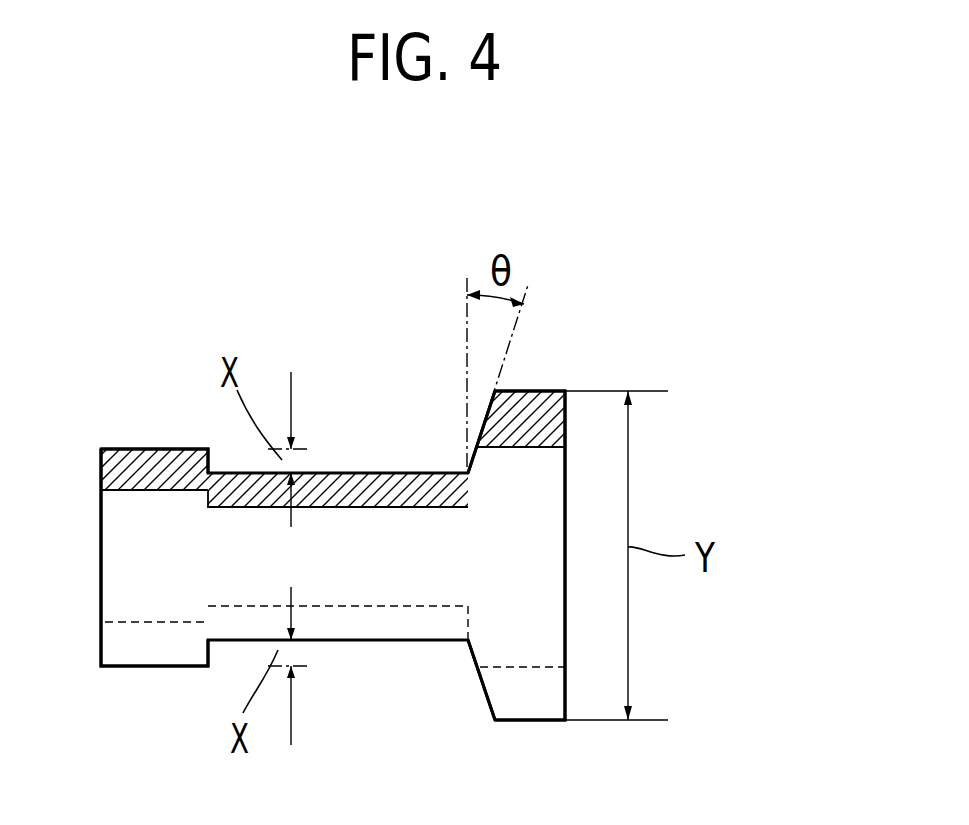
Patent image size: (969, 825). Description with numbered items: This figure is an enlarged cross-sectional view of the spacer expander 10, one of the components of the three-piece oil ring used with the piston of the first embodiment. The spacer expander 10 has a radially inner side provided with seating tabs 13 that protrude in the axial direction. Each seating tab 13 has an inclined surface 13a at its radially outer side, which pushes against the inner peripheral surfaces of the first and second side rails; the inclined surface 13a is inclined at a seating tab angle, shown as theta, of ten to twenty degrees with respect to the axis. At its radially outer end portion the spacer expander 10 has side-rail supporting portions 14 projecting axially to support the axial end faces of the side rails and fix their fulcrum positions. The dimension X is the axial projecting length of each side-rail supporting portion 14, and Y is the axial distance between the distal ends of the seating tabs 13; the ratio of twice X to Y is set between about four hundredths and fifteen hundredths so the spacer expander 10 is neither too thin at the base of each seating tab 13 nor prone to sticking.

The spacer expander 10 is at (745, 434).
The seating tab 13 is at (533, 400).
The inclined surface 13a is at (483, 694).
The side-rail supporting portion 14 is at (140, 449).